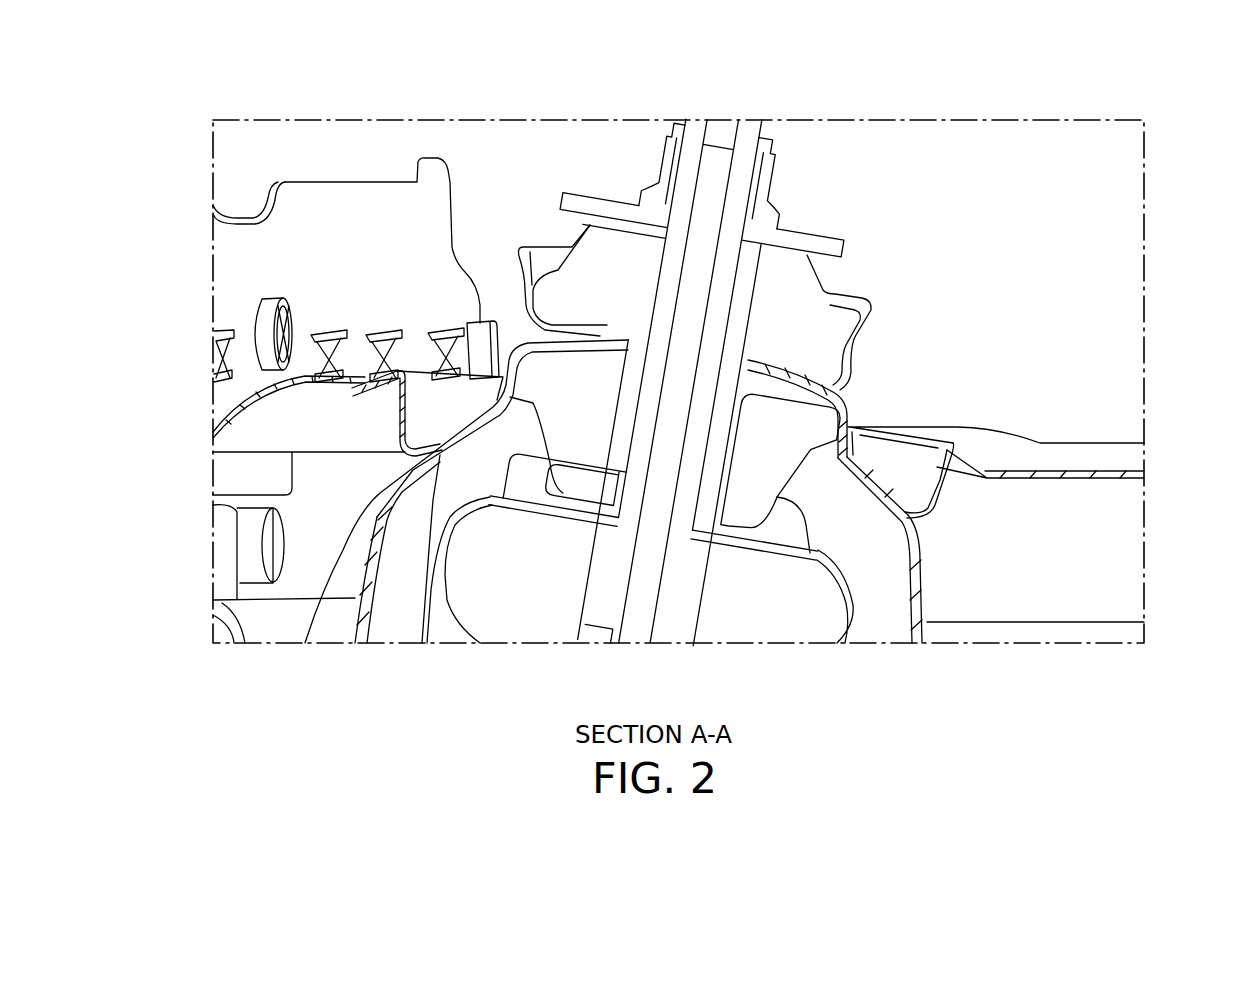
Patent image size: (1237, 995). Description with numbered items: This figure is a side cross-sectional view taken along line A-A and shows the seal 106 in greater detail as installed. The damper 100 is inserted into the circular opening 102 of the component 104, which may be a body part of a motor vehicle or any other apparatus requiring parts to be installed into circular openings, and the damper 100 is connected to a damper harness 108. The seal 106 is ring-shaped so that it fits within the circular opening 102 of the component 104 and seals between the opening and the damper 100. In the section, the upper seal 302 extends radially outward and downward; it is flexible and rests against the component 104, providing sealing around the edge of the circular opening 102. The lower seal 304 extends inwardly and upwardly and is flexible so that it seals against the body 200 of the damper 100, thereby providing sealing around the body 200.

The damper 100 is at (410, 613).
The circular opening 102 is at (868, 428).
The component 104 is at (302, 413).
The seal 106 is at (920, 450).
The damper harness 108 is at (800, 245).
The body 200 is at (305, 643).
The upper seal 302 is at (376, 345).
The lower seal 304 is at (393, 607).